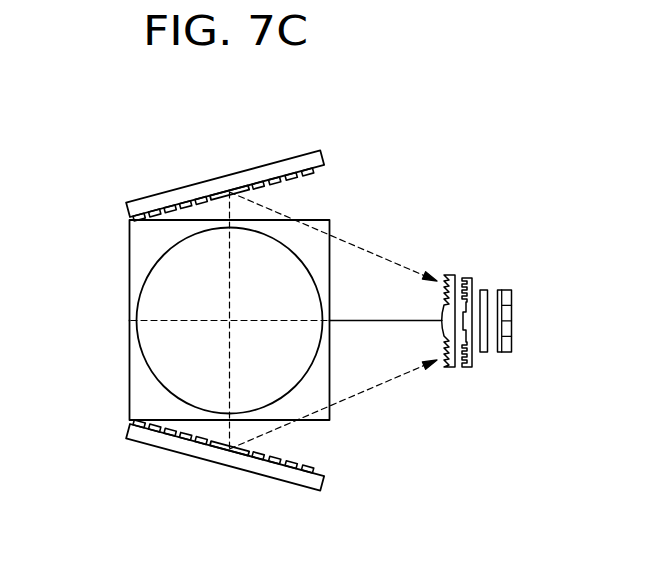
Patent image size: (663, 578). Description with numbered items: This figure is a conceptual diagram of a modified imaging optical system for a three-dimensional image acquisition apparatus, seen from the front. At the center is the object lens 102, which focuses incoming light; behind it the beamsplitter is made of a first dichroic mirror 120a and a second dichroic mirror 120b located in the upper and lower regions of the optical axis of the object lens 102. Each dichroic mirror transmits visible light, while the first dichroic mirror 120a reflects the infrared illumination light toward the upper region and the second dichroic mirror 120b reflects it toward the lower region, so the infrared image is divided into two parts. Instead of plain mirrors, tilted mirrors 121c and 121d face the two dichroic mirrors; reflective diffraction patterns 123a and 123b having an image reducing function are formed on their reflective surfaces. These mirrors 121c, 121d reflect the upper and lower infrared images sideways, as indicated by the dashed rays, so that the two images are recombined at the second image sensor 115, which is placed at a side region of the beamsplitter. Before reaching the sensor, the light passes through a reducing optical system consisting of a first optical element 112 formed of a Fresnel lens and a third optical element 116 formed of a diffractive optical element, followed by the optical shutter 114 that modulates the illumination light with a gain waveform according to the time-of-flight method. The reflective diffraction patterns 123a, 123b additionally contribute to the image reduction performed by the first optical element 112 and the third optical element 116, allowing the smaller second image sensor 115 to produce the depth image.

The object lens 102 is at (308, 372).
The first optical element 112 is at (449, 276).
The optical shutter 114 is at (482, 352).
The second image sensor 115 is at (507, 351).
The third optical element 116 is at (470, 279).
The first dichroic mirror 120a is at (135, 248).
The second dichroic mirror 120b is at (135, 397).
The mirror 121c is at (229, 182).
The mirror 121d is at (220, 460).
The reflective diffraction pattern 123a is at (305, 174).
The reflective diffraction pattern 123b is at (304, 468).